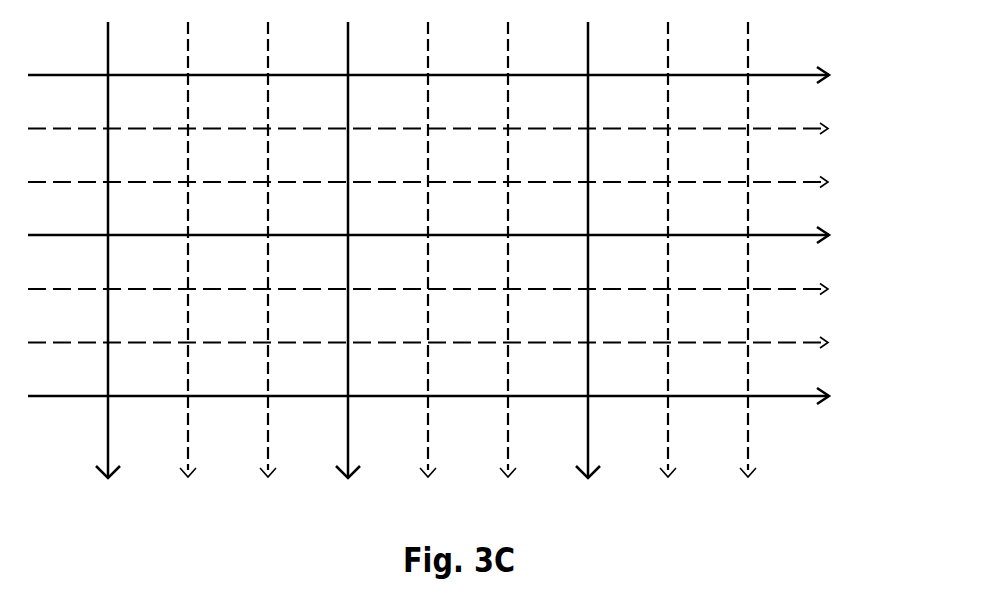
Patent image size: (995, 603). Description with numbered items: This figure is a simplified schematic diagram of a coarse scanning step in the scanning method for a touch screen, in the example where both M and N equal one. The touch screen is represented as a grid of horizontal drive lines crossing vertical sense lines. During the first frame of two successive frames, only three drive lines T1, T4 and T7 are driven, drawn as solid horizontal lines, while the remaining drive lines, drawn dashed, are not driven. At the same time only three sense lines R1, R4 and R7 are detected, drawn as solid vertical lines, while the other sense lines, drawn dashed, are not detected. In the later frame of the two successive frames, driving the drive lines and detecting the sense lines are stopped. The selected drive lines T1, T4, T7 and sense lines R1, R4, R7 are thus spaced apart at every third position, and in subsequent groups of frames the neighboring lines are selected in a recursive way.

The drive line T1 is at (461, 73).
The drive line T4 is at (461, 236).
The drive line T7 is at (461, 397).
The sense line R1 is at (99, 277).
The sense line R4 is at (355, 277).
The sense line R7 is at (586, 276).